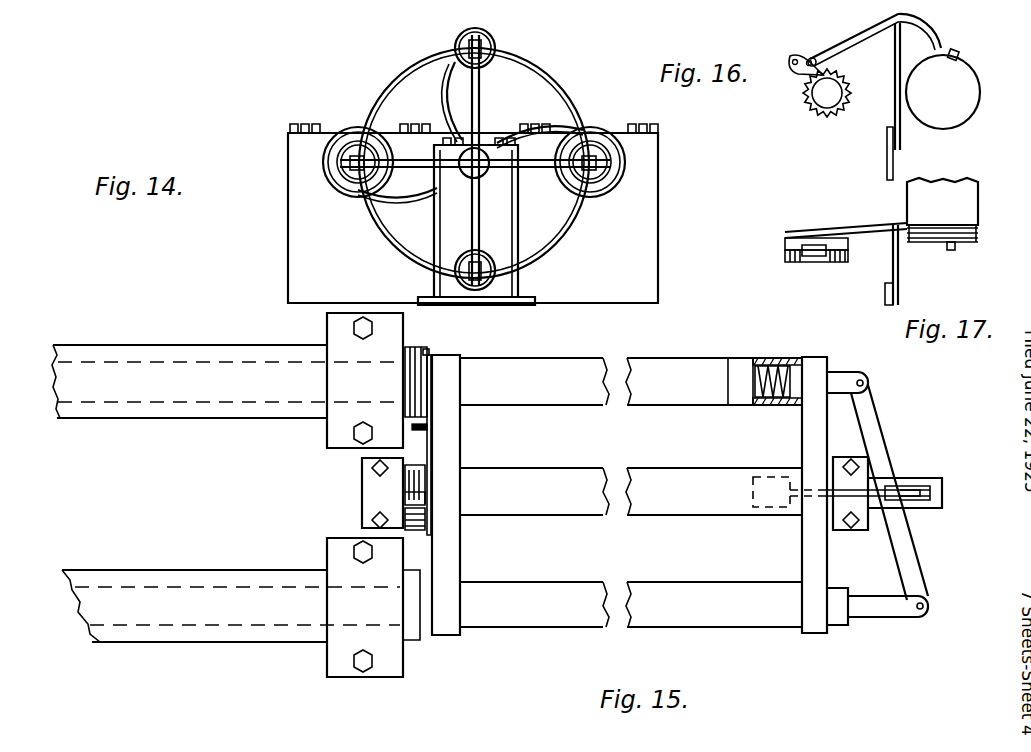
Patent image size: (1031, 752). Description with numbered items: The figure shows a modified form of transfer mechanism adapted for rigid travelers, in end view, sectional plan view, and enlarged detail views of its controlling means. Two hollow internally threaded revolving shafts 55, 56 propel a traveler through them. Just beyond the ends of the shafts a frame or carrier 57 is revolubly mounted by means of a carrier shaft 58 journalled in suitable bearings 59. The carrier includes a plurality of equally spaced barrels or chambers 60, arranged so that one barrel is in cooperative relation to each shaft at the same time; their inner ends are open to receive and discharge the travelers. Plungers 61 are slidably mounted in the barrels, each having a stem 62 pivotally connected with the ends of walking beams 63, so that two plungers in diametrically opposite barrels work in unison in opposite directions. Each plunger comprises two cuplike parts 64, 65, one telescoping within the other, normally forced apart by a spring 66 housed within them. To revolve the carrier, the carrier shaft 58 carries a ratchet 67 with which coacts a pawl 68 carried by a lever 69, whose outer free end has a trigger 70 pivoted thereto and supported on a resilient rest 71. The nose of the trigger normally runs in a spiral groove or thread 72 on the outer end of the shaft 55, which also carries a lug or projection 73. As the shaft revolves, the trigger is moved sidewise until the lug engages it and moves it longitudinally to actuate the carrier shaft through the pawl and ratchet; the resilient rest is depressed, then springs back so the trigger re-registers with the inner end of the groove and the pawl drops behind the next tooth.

In FIG. 14, the hollow internally threaded revolving shaft 55 is at (572, 128).
In FIG. 15, the hollow internally threaded revolving shaft 55 is at (222, 418).
In FIG. 16, the hollow internally threaded revolving shaft 55 is at (978, 106).
In FIG. 17, the hollow internally threaded revolving shaft 55 is at (980, 180).
In FIG. 14, the hollow internally threaded revolving shaft 56 is at (352, 130).
In FIG. 15, the hollow internally threaded revolving shaft 56 is at (218, 570).
In FIG. 14, the frame or carrier 57 is at (562, 110).
In FIG. 15, the frame or carrier 57 is at (815, 427).
In FIG. 14, the carrier shaft 58 is at (505, 185).
In FIG. 15, the carrier shaft 58 is at (403, 502).
In FIG. 16, the carrier shaft 58 is at (824, 98).
In FIG. 15, the bearings 59 is at (365, 480).
In FIG. 14, the barrels or chambers 60 is at (456, 44).
In FIG. 15, the barrels or chambers 60 is at (710, 362).
In FIG. 14, the plungers 61 is at (340, 160).
In FIG. 15, the plungers 61 is at (800, 358).
In FIG. 14, the stem 62 is at (342, 195).
In FIG. 15, the stem 62 is at (850, 372).
In FIG. 14, the walking beams 63 is at (496, 140).
In FIG. 15, the walking beams 63 is at (930, 493).
In FIG. 15, the cuplike part 64 is at (778, 362).
In FIG. 15, the cuplike part 65 is at (745, 358).
In FIG. 15, the spring 66 is at (780, 405).
In FIG. 15, the ratchet 67 is at (425, 525).
In FIG. 16, the ratchet 67 is at (804, 97).
In FIG. 17, the ratchet 67 is at (785, 254).
In FIG. 15, the pawl 68 is at (427, 485).
In FIG. 16, the pawl 68 is at (813, 58).
In FIG. 17, the pawl 68 is at (820, 255).
In FIG. 16, the lever 69 is at (796, 78).
In FIG. 17, the lever 69 is at (785, 236).
In FIG. 14, the trigger 70 is at (442, 94).
In FIG. 15, the trigger 70 is at (427, 373).
In FIG. 16, the trigger 70 is at (856, 42).
In FIG. 17, the trigger 70 is at (832, 228).
In FIG. 15, the resilient rest 71 is at (427, 427).
In FIG. 16, the resilient rest 71 is at (893, 110).
In FIG. 17, the resilient rest 71 is at (899, 273).
In FIG. 15, the spiral groove or thread 72 is at (422, 347).
In FIG. 17, the spiral groove or thread 72 is at (972, 244).
In FIG. 15, the lug or projection 73 is at (430, 350).
In FIG. 16, the lug or projection 73 is at (960, 55).
In FIG. 17, the lug or projection 73 is at (952, 250).